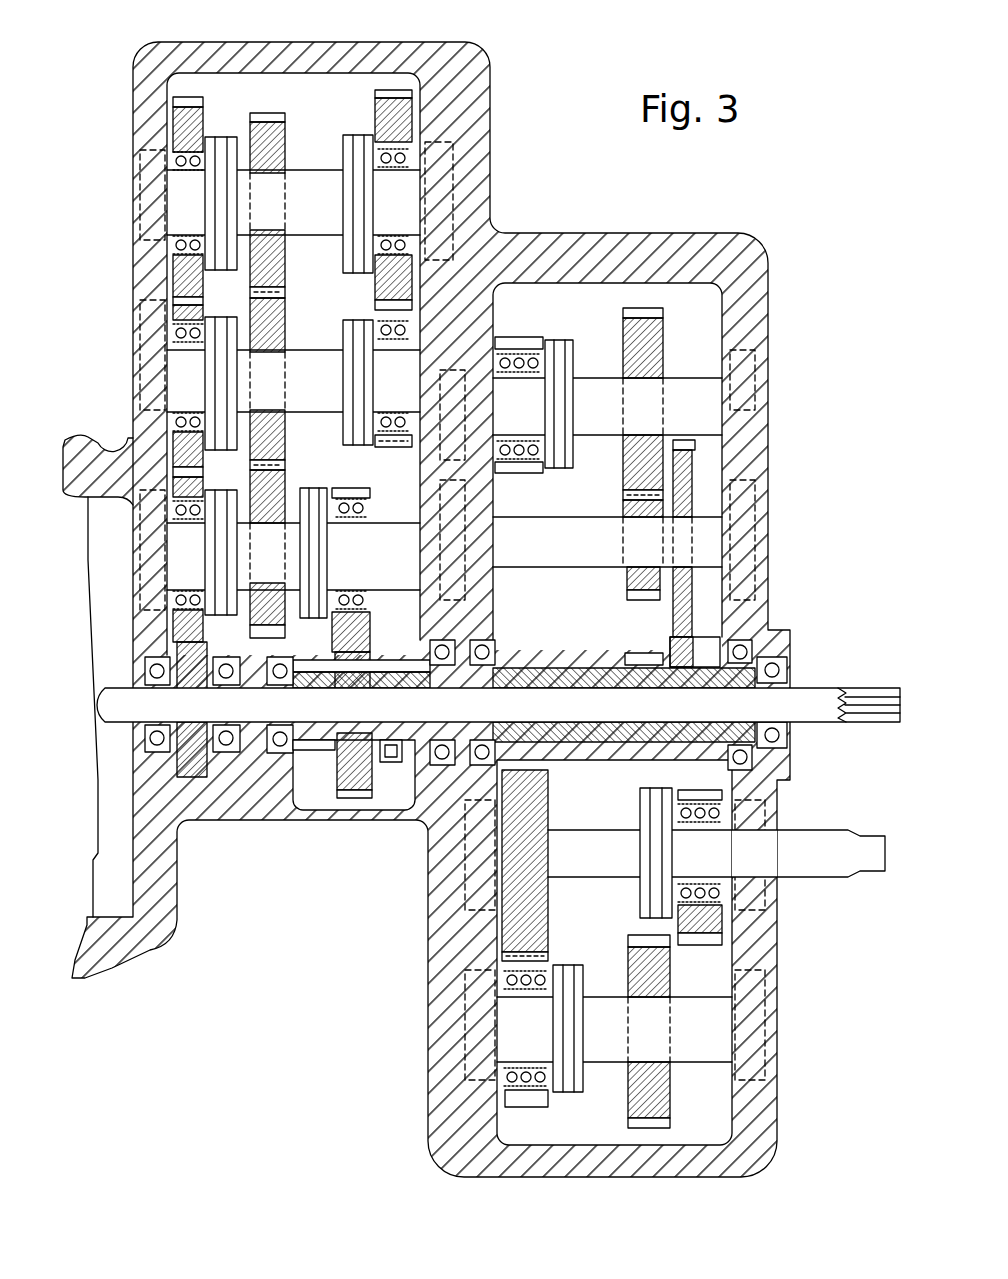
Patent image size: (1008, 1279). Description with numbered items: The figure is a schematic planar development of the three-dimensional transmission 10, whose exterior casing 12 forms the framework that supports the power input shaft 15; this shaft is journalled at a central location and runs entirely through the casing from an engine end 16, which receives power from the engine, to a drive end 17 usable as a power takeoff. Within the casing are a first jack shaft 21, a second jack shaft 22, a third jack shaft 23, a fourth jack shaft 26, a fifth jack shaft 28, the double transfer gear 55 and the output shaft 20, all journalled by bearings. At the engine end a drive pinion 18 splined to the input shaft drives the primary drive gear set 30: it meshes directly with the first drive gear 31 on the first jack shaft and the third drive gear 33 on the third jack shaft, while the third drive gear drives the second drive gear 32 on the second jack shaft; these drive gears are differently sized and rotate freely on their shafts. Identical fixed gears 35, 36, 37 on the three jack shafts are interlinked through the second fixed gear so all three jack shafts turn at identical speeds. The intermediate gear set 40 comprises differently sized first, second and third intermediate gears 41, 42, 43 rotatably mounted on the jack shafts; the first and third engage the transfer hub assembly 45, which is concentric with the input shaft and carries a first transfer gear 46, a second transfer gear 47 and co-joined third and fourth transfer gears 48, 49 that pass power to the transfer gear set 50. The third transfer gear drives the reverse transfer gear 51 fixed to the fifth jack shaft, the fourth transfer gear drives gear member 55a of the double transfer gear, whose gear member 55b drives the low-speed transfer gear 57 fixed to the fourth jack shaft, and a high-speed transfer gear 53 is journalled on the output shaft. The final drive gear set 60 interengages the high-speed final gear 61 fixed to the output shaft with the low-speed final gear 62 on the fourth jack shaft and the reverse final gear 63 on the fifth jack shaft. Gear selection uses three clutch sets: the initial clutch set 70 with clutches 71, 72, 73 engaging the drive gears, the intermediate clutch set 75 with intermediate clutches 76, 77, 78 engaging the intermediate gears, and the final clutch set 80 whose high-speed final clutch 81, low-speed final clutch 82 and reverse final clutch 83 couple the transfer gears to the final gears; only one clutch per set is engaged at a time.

The transmission 10 is at (520, 160).
The exterior casing 12 is at (700, 236).
The power input shaft 15 is at (476, 681).
The engine end 16 is at (120, 680).
The drive end 17 is at (810, 690).
The drive pinion 18 is at (190, 780).
The output shaft 20 is at (830, 830).
The first jack shaft 21 is at (190, 570).
The second jack shaft 22 is at (190, 378).
The third jack shaft 23 is at (185, 220).
The fourth jack shaft 26 is at (705, 410).
The fifth jack shaft 28 is at (715, 1020).
The primary drive gear set 30 is at (147, 90).
The first drive gear 31 is at (175, 470).
The second drive gear 32 is at (178, 305).
The third drive gear 33 is at (178, 100).
The first fixed gear 35 is at (277, 637).
The second fixed gear 36 is at (292, 290).
The third fixed gear 37 is at (270, 112).
The intermediate gear set 40 is at (460, 223).
The first intermediate gear 41 is at (355, 497).
The second intermediate gear 42 is at (395, 455).
The third intermediate gear 43 is at (400, 96).
The transfer hub assembly 45 is at (312, 790).
The first transfer gear 46 is at (345, 788).
The second transfer gear 47 is at (395, 780).
The third transfer gear 48 is at (640, 660).
The fourth transfer gear 49 is at (705, 640).
The transfer gear set 50 is at (669, 456).
The reverse transfer gear 51 is at (627, 1120).
The high-speed transfer gear 53 is at (715, 940).
The double transfer gear 55 is at (759, 538).
The gear member 55a is at (686, 445).
The gear member 55b is at (640, 580).
The low-speed transfer gear 57 is at (668, 345).
The final drive gear set 60 is at (569, 349).
The high-speed final gear 61 is at (548, 895).
The low-speed final gear 62 is at (520, 345).
The reverse final gear 63 is at (535, 1110).
The initial clutch set 70 is at (185, 139).
The first clutch 71 is at (215, 535).
The second clutch 72 is at (212, 362).
The third clutch 73 is at (220, 180).
The intermediate clutch set 75 is at (340, 140).
The first intermediate clutch 76 is at (330, 555).
The second intermediate clutch 77 is at (360, 320).
The third intermediate clutch 78 is at (345, 160).
The final clutch set 80 is at (594, 349).
The high-speed final clutch 81 is at (645, 830).
The low-speed final clutch 82 is at (560, 472).
The reverse final clutch 83 is at (570, 975).